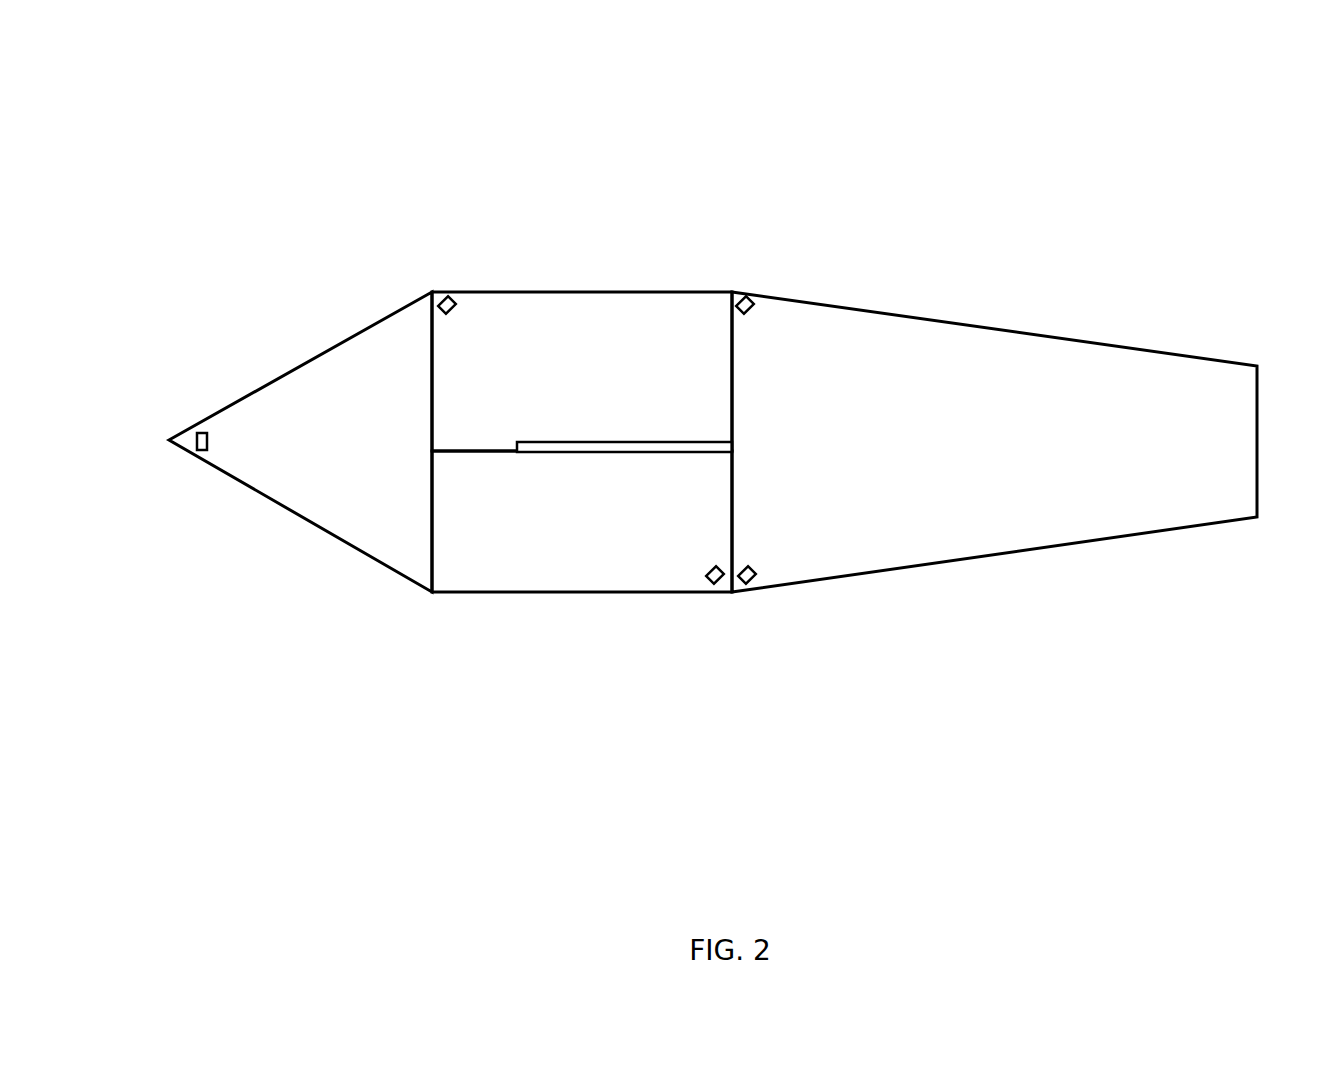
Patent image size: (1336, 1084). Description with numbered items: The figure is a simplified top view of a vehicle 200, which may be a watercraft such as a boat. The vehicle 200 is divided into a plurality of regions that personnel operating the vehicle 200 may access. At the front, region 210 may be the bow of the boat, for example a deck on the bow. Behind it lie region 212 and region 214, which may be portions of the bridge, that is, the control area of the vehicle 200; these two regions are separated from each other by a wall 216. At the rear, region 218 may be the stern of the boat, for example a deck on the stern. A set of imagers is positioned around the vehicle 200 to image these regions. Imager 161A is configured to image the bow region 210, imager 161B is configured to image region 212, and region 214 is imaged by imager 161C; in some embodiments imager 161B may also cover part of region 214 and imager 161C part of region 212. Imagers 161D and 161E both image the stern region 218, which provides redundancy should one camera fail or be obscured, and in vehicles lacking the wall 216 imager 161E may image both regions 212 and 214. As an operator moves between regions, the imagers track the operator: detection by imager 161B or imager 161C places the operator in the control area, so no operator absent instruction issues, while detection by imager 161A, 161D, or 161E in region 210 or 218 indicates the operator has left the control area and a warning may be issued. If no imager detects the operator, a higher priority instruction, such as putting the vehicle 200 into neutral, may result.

The vehicle 200 is at (243, 126).
The region 210 is at (315, 394).
The region 212 is at (604, 330).
The region 214 is at (524, 540).
The wall 216 is at (692, 438).
The region 218 is at (1014, 520).
The imager 161A is at (200, 432).
The imager 161B is at (455, 298).
The imager 161C is at (708, 586).
The imager 161D is at (753, 298).
The imager 161E is at (755, 585).